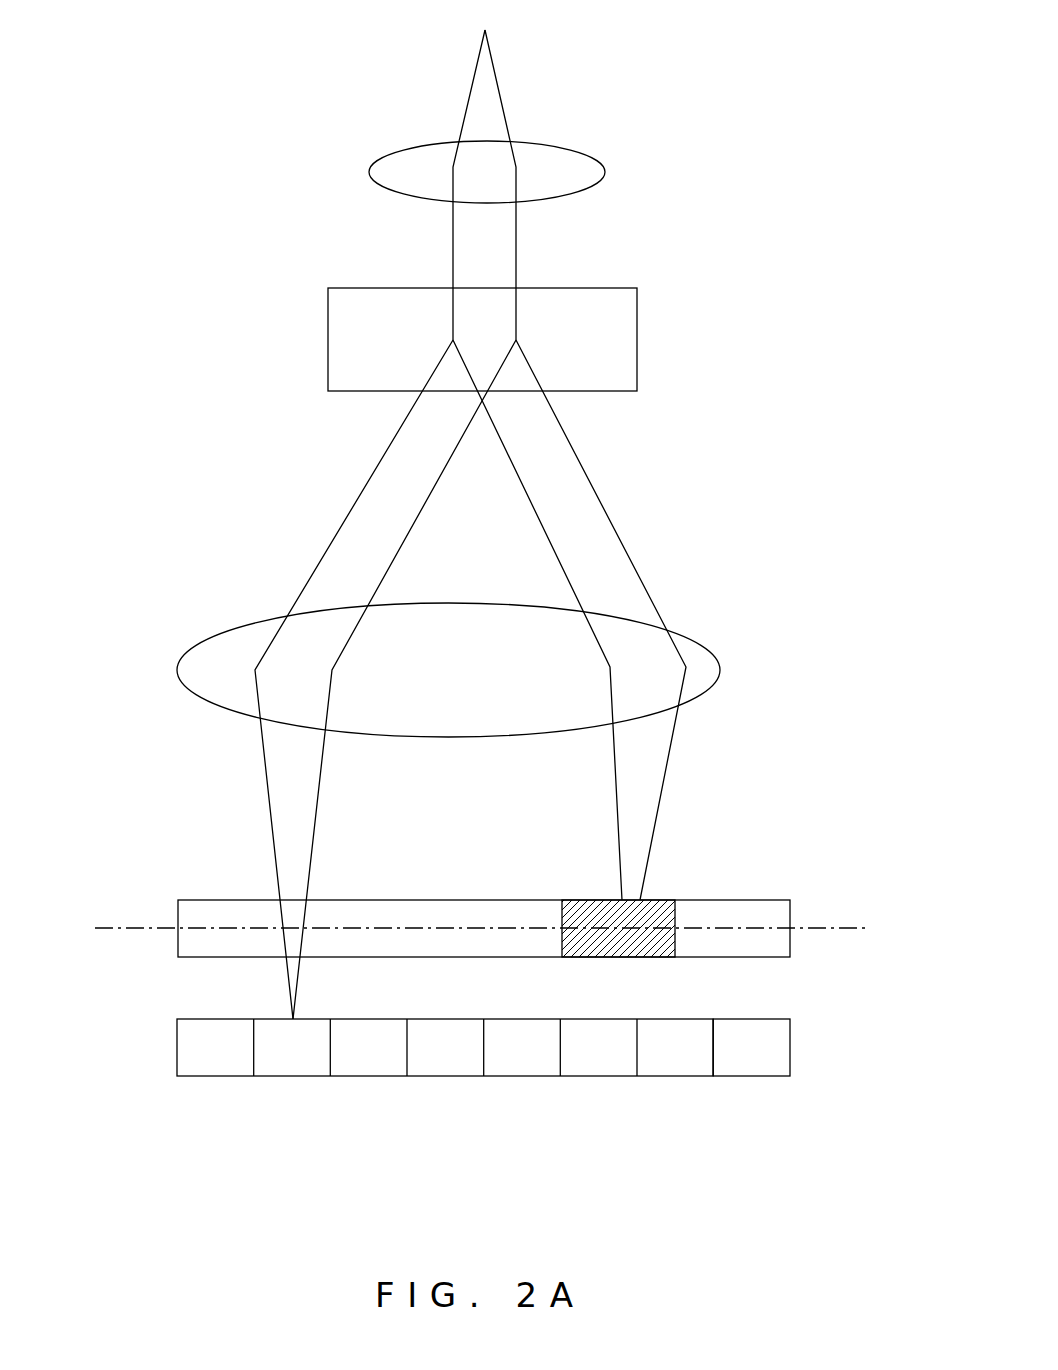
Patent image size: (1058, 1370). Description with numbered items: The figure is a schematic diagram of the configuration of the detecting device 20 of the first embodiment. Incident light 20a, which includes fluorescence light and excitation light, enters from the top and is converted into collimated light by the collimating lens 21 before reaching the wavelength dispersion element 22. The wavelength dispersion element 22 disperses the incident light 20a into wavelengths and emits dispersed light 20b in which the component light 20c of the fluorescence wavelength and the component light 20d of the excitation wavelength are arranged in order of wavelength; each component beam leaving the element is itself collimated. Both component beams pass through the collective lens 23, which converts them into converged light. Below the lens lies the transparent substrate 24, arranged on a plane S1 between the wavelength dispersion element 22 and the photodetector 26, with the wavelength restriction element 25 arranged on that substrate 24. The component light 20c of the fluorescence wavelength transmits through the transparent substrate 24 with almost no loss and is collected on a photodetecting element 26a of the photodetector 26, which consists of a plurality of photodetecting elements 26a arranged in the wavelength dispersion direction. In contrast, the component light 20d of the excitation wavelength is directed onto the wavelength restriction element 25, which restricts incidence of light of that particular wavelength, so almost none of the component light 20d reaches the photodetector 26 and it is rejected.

The detecting device 20 is at (778, 58).
The incident light 20a is at (482, 87).
The dispersed light 20b is at (560, 679).
The component light of the fluorescence wavelength 20c is at (392, 513).
The component light of the excitation wavelength 20d is at (548, 473).
The collimating lens 21 is at (385, 173).
The wavelength dispersion element 22 is at (343, 347).
The collective lens 23 is at (195, 675).
The transparent substrate 24 is at (183, 917).
The wavelength restriction element 25 is at (583, 913).
The photodetector 26 is at (162, 1052).
The photodetecting element 26a is at (777, 1040).
The plane S1 is at (120, 928).